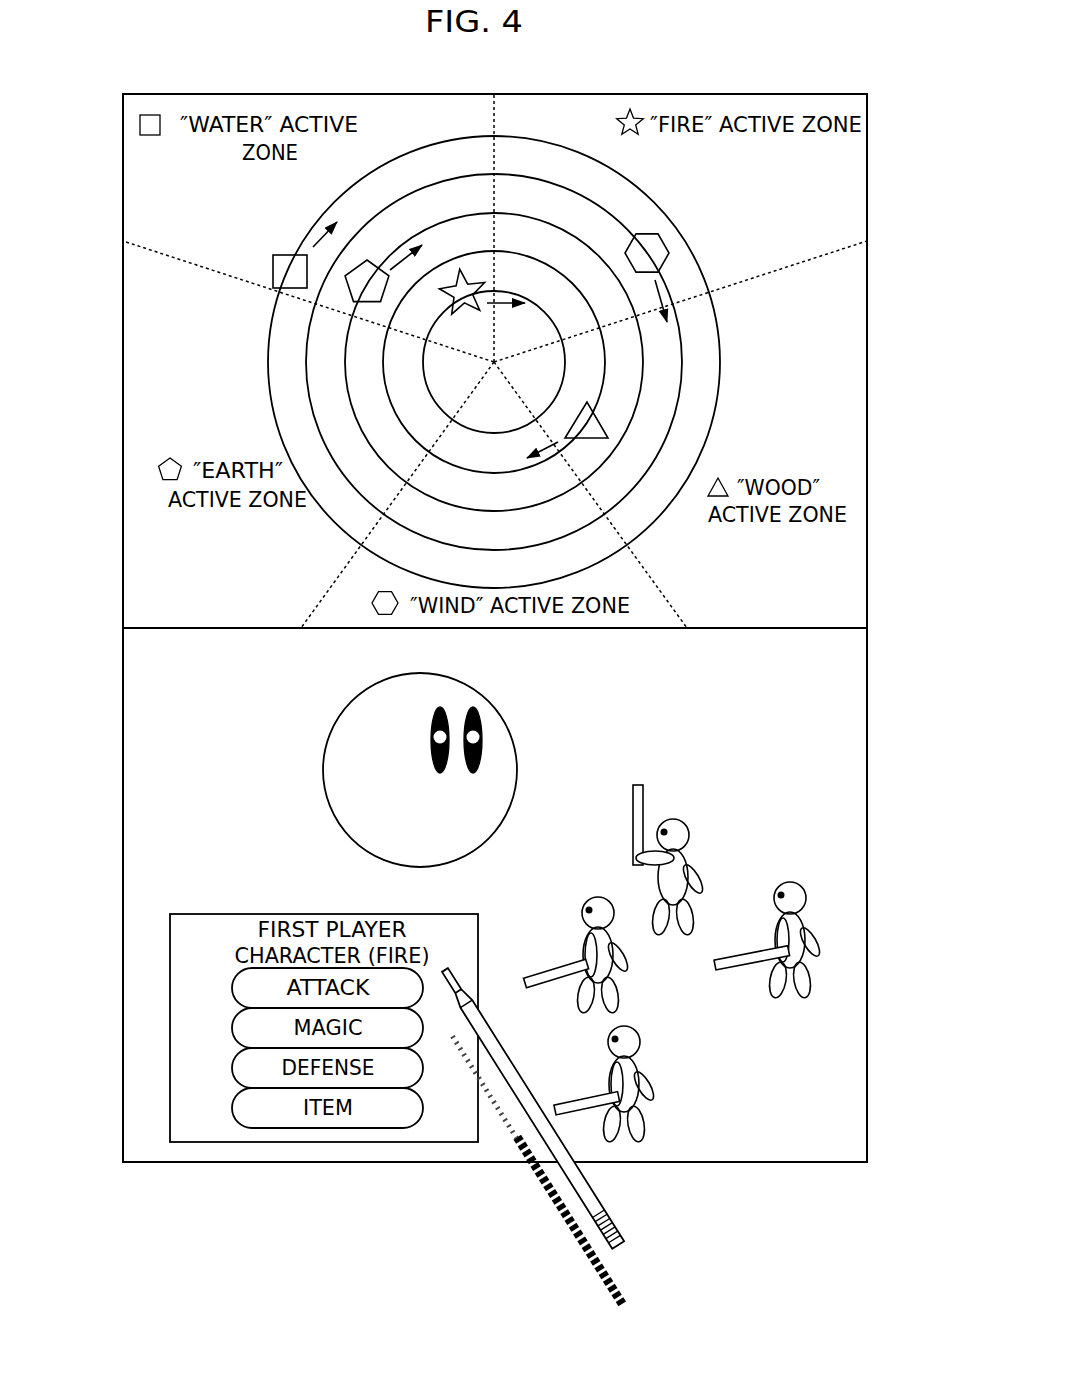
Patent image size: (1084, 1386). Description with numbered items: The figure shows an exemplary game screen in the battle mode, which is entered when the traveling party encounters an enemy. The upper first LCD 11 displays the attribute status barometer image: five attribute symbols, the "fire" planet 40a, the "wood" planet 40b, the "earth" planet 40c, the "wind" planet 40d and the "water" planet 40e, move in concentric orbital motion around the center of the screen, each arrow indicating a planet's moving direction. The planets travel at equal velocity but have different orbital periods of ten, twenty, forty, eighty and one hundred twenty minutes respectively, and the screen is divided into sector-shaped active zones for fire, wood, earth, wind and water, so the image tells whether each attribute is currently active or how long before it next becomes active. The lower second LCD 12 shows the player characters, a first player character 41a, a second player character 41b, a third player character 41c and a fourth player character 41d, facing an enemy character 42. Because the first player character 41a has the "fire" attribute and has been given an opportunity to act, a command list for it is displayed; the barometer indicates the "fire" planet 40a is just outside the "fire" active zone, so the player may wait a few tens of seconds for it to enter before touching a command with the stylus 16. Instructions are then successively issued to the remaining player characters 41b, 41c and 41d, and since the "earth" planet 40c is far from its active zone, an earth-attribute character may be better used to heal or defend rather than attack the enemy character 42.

The first LCD 11 is at (867, 175).
The second LCD 12 is at (867, 700).
The stylus 16 is at (545, 1150).
The "fire" planet 40a is at (478, 288).
The "wood" planet 40b is at (608, 428).
The "earth" planet 40c is at (348, 290).
The "wind" planet 40d is at (668, 245).
The "water" planet 40e is at (272, 268).
The first player character 41a is at (690, 830).
The second player character 41b is at (690, 995).
The third player character 41c is at (808, 930).
The fourth player character 41d is at (650, 1122).
The enemy character 42 is at (323, 752).